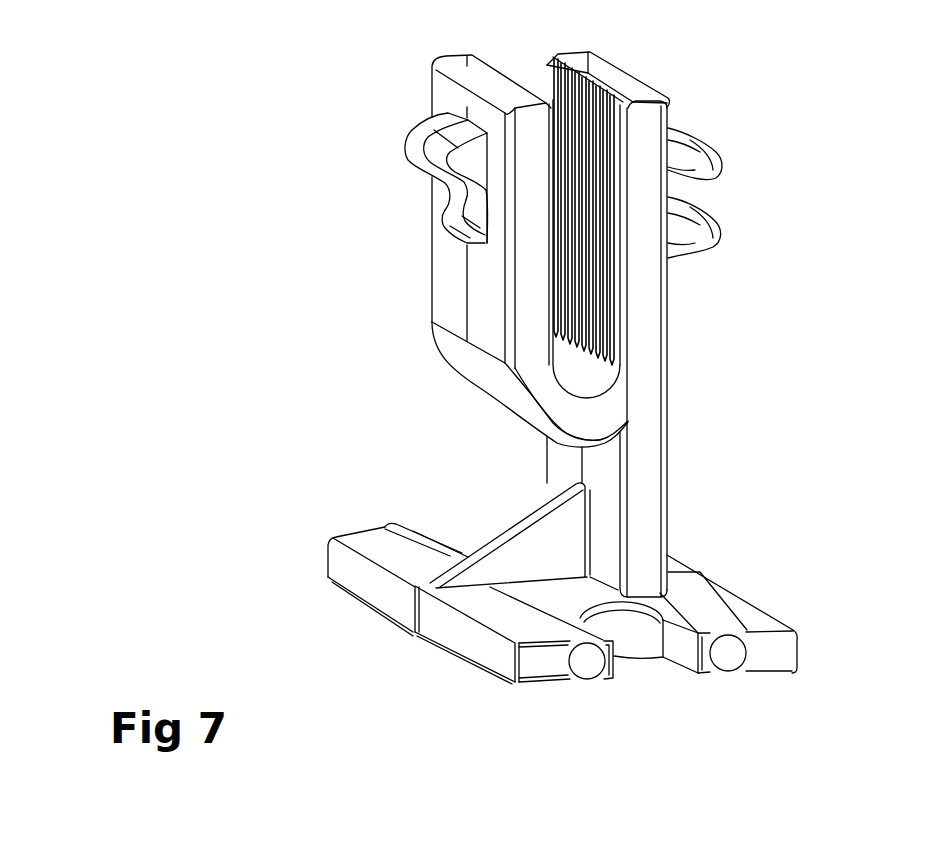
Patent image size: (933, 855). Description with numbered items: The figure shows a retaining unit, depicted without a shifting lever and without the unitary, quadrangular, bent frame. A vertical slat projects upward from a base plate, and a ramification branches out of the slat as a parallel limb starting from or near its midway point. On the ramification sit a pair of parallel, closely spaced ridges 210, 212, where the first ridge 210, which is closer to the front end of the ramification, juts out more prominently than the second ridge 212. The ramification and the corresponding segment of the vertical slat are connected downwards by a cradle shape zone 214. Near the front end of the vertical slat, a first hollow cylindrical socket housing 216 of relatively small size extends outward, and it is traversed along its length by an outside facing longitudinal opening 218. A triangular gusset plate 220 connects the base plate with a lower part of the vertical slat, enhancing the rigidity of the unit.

The ridge 210 is at (458, 160).
The ridge 212 is at (465, 222).
The cradle shape zone 214 is at (583, 388).
The first hollow cylindrical socket housing 216 is at (690, 160).
The outside facing longitudinal opening 218 is at (703, 193).
The gusset plate 220 is at (545, 555).